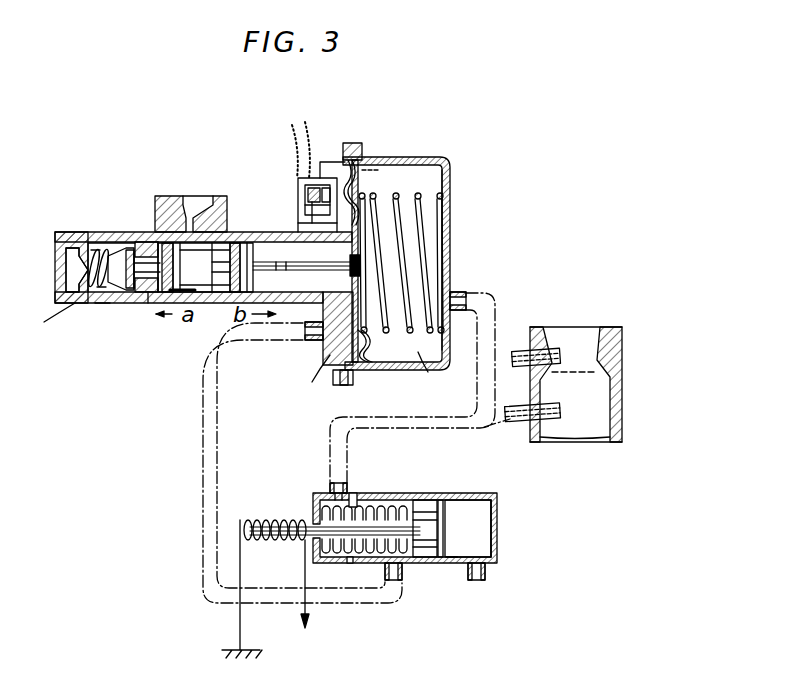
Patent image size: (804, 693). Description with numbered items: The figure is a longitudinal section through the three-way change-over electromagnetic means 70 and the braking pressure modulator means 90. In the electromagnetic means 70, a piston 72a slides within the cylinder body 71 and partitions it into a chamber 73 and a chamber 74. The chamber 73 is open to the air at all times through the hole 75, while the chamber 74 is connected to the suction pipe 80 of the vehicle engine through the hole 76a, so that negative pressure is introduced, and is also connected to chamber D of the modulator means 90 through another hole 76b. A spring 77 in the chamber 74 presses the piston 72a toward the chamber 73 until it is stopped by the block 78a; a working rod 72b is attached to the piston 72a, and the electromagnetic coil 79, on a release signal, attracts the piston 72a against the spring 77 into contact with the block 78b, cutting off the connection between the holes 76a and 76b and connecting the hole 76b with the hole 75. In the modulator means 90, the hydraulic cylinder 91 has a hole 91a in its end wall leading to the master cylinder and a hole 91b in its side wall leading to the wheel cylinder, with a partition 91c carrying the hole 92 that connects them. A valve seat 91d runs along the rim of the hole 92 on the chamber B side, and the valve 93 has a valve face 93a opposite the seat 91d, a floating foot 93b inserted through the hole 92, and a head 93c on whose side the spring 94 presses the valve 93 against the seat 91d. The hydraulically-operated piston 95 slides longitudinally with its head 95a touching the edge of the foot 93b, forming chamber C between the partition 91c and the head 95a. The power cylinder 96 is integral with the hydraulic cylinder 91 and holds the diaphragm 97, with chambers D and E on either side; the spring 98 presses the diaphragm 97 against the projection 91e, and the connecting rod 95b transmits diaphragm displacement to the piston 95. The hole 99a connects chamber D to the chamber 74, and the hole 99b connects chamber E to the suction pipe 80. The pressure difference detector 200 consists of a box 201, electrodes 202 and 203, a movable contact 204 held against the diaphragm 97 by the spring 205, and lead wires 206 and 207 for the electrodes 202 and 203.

The three-way change-over electromagnetic means 70 is at (382, 612).
The cylinder body 71 is at (498, 510).
The piston 72a is at (425, 503).
The working rod 72b is at (300, 537).
The chamber 73 is at (480, 548).
The chamber 74 is at (378, 506).
The hole 75 is at (488, 570).
The hole 76a is at (328, 492).
The hole 76b is at (400, 582).
The spring 77 is at (362, 496).
The block 78a is at (452, 560).
The block 78b is at (350, 566).
The electromagnetic coil 79 is at (268, 519).
The suction pipe 80 is at (538, 327).
The braking pressure modulator means 90 is at (252, 198).
The hydraulic cylinder 91 is at (153, 303).
The hole 91a is at (72, 270).
The hole 91b is at (193, 205).
The partition 91c is at (152, 307).
The valve seat 91d is at (100, 302).
The projection 91e is at (338, 372).
The hole 92 is at (142, 292).
The valve 93 is at (128, 250).
The valve face 93a is at (153, 240).
The floating foot 93b is at (170, 230).
The head 93c is at (115, 252).
The spring 94 is at (103, 248).
The hydraulically-operated piston 95 is at (222, 300).
The head 95a is at (213, 282).
The connecting rod 95b is at (281, 262).
The power cylinder 96 is at (442, 160).
The diaphragm 97 is at (364, 220).
The spring 98 is at (420, 197).
The hole 99a is at (313, 336).
The hole 99b is at (461, 292).
The pressure difference detector 200 is at (418, 157).
The box 201 is at (340, 160).
The electrode 202 is at (308, 178).
The electrode 203 is at (305, 200).
The movable contact 204 is at (335, 186).
The spring 205 is at (300, 195).
The lead wire 206 is at (322, 178).
The lead wire 207 is at (300, 180).